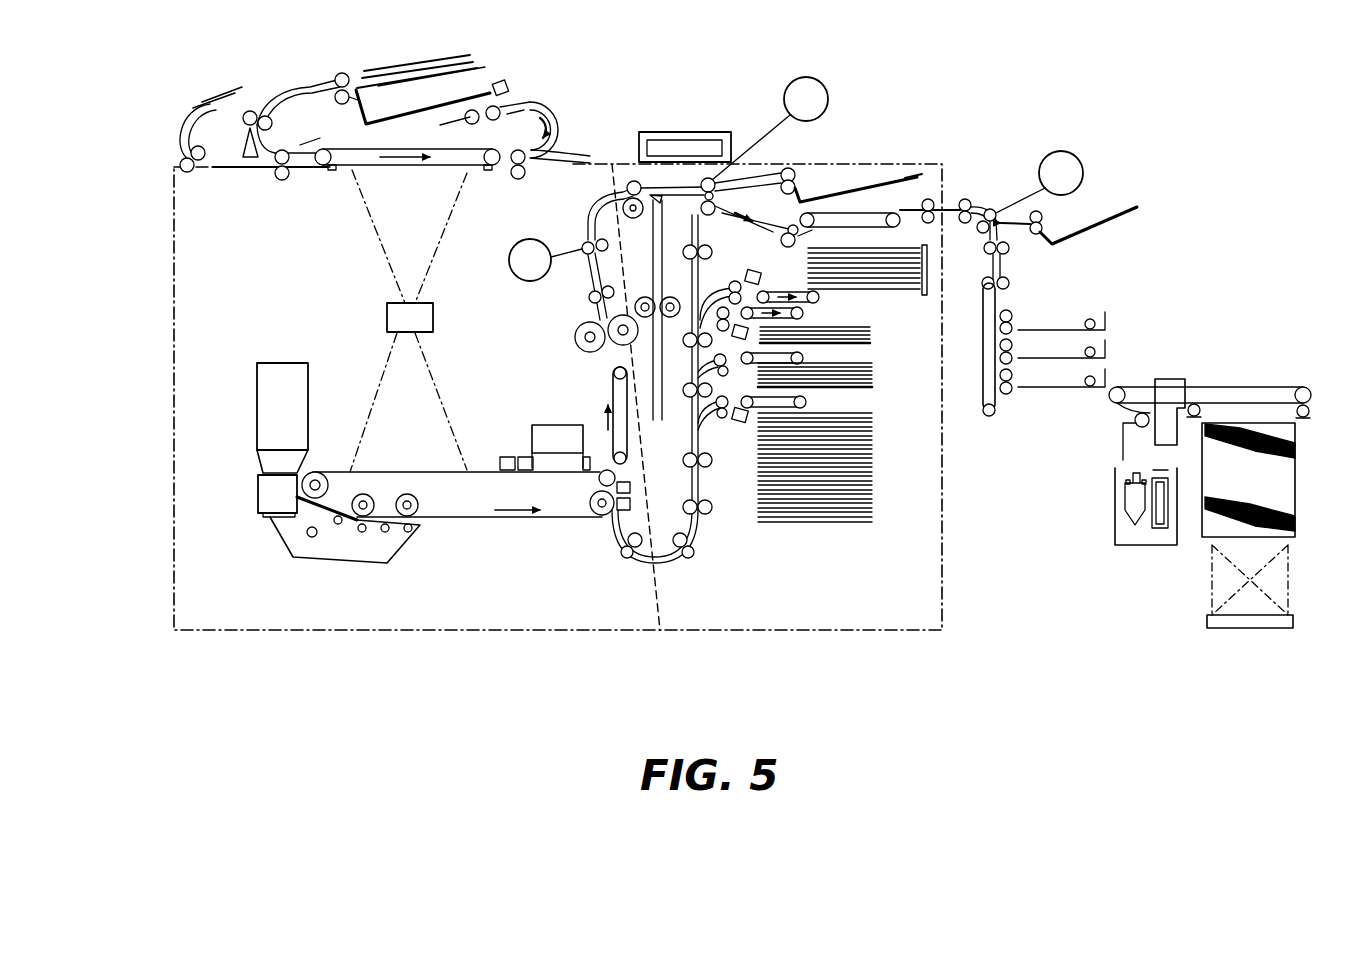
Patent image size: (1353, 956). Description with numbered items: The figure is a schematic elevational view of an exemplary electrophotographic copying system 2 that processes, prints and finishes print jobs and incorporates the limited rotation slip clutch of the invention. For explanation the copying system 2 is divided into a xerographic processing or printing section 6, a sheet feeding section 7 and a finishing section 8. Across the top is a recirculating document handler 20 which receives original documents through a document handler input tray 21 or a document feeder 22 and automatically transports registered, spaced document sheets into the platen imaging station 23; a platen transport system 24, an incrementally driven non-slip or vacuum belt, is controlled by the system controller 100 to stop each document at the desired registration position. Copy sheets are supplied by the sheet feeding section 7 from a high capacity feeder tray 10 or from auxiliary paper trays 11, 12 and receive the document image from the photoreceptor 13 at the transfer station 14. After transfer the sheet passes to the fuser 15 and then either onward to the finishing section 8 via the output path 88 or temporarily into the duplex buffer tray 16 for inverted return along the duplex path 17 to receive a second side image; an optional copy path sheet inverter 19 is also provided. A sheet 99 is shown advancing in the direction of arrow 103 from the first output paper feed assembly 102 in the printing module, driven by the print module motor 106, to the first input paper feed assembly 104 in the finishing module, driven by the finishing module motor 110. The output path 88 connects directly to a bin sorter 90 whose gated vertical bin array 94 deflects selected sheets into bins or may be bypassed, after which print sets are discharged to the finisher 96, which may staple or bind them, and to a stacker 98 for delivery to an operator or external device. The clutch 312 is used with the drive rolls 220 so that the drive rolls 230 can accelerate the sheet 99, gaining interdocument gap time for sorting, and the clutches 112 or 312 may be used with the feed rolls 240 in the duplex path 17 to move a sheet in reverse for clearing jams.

The electrophotographic copying system 2 is at (665, 58).
The recirculating document handler 20 is at (542, 90).
The document handler input tray 21 is at (367, 126).
The document feeder 22 is at (575, 156).
The imaging station 23 is at (343, 176).
The platen transport system 24 is at (470, 143).
The clutch 312 is at (587, 245).
The drive rolls 230 is at (636, 181).
The drive rolls 220 is at (597, 252).
The fuser 15 is at (576, 348).
The system controller 100 is at (717, 134).
The print module motor 106 is at (813, 80).
The copy path sheet inverter 19 is at (765, 212).
The sheet 99 is at (873, 208).
The clutch 112 is at (918, 200).
The first output paper feed assembly 102 is at (929, 198).
The output path 88 is at (949, 202).
The first input paper feed assembly 104 is at (968, 205).
The arrow 103 is at (953, 233).
The finishing module motor 110 is at (1073, 156).
The bin sorter 90 is at (1010, 300).
The vertical bin array 94 is at (1027, 395).
The finishing section 8 is at (1142, 325).
The finisher 96 is at (1152, 440).
The stacker 98 is at (1298, 498).
The duplex path 17 is at (718, 290).
The duplex buffer tray 16 is at (897, 292).
The auxiliary paper tray 12 is at (858, 345).
The auxiliary paper tray 11 is at (855, 392).
The high capacity feeder tray 10 is at (852, 523).
The sheet feeding section 7 is at (884, 456).
The photoreceptor 13 is at (475, 470).
The xerographic processing section 6 is at (432, 522).
The transfer station 14 is at (640, 500).
The feed rolls 240 is at (628, 558).